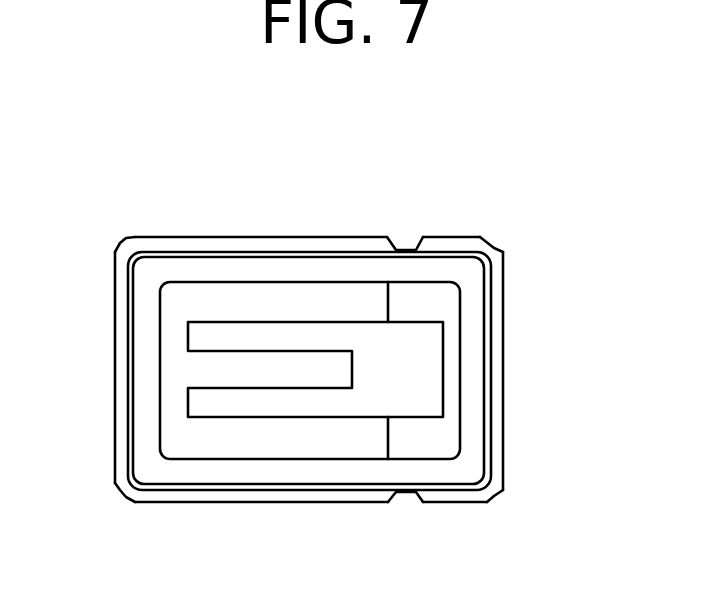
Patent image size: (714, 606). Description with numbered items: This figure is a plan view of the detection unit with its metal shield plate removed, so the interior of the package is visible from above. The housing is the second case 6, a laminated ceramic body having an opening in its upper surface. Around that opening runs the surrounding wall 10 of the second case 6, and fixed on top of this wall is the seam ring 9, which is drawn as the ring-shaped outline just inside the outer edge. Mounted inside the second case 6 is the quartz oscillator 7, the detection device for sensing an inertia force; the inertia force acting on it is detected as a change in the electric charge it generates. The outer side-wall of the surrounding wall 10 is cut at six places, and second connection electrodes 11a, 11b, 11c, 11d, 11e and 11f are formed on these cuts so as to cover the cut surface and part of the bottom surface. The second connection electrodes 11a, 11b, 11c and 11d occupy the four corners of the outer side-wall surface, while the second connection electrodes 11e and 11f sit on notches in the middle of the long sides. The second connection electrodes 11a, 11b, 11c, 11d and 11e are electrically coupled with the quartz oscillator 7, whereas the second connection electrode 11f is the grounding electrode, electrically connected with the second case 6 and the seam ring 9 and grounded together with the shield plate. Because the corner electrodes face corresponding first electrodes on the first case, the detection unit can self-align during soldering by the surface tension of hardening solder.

The second case 6 is at (297, 239).
The quartz oscillator 7 is at (420, 351).
The seam ring 9 is at (443, 472).
The surrounding wall 10 is at (495, 402).
The second connection electrode 11a is at (494, 495).
The second connection electrode 11b is at (495, 248).
The second connection electrode 11c is at (125, 490).
The second connection electrode 11d is at (124, 248).
The second connection electrode 11e is at (402, 498).
The second connection electrode 11f is at (403, 245).